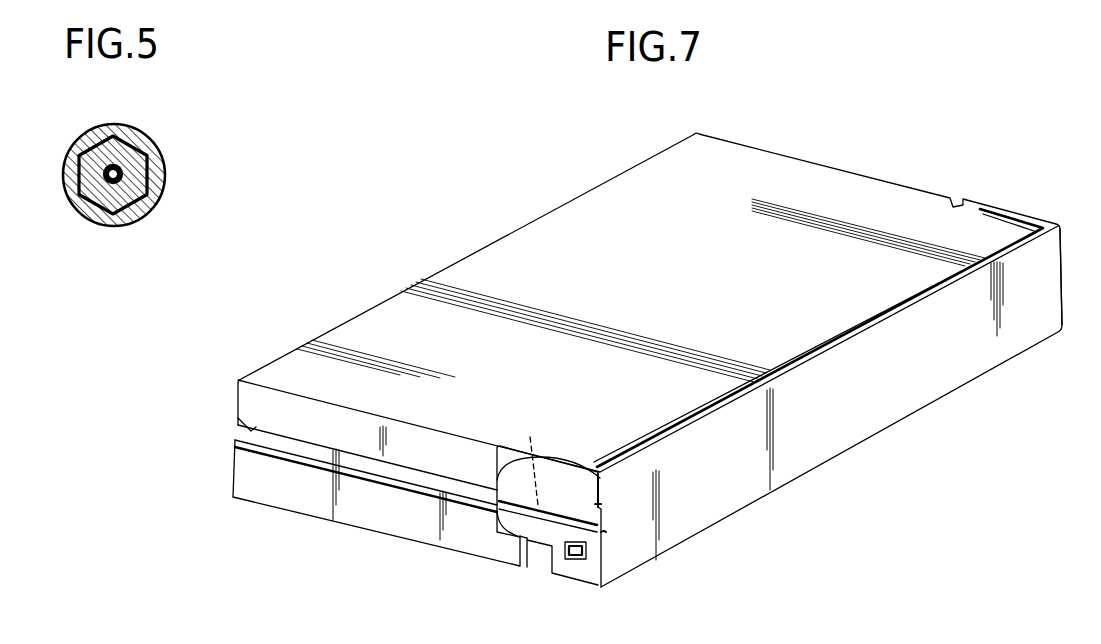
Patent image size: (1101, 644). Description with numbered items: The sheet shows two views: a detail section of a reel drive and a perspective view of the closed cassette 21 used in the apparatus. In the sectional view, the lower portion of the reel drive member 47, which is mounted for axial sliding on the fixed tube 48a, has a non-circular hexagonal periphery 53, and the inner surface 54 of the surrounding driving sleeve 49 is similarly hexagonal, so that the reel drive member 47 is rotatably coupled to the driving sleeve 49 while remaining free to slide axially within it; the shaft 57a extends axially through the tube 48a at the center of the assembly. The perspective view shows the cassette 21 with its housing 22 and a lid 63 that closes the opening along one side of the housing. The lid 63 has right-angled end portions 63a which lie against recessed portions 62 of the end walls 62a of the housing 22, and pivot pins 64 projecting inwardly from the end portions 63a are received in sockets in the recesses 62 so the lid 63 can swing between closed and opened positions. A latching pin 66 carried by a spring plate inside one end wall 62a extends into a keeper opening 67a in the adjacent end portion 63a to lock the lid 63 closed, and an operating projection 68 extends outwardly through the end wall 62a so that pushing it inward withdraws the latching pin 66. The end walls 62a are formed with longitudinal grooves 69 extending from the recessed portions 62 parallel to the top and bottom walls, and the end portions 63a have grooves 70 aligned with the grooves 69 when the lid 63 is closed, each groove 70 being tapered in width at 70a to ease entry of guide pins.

In FIG. 7, the cassette 21 is at (775, 138).
In FIG. 7, the cassette housing 22 is at (570, 174).
In FIG. 5, the reel drive member 47 is at (167, 195).
In FIG. 5, the fixed tube 48a is at (127, 147).
In FIG. 5, the driving sleeve 49 is at (167, 163).
In FIG. 5, the hexagonal periphery 53 is at (85, 135).
In FIG. 5, the inner surface 54 is at (140, 206).
In FIG. 5, the shaft 57a is at (108, 196).
In FIG. 7, the recessed portion 62 is at (522, 452).
In FIG. 7, the end wall 62a is at (362, 510).
In FIG. 7, the lid 63 is at (724, 490).
In FIG. 7, the end portion 63a is at (587, 488).
In FIG. 7, the pivot pin 64 is at (516, 463).
In FIG. 7, the latching pin 66 is at (579, 560).
In FIG. 7, the keeper opening 67a is at (569, 560).
In FIG. 7, the operating projection 68 is at (540, 560).
In FIG. 7, the longitudinal groove 69 is at (246, 424).
In FIG. 7, the groove 70 is at (569, 505).
In FIG. 7, the tapered end 70a is at (604, 533).